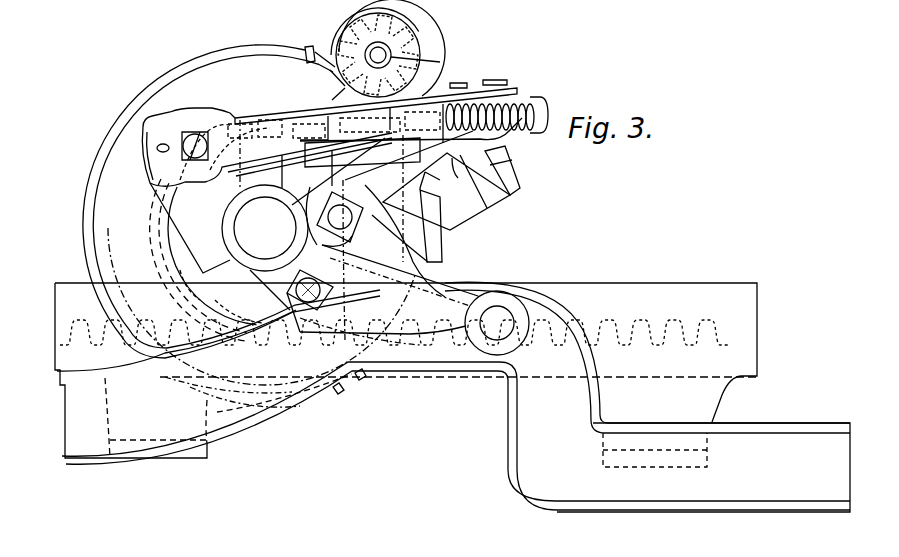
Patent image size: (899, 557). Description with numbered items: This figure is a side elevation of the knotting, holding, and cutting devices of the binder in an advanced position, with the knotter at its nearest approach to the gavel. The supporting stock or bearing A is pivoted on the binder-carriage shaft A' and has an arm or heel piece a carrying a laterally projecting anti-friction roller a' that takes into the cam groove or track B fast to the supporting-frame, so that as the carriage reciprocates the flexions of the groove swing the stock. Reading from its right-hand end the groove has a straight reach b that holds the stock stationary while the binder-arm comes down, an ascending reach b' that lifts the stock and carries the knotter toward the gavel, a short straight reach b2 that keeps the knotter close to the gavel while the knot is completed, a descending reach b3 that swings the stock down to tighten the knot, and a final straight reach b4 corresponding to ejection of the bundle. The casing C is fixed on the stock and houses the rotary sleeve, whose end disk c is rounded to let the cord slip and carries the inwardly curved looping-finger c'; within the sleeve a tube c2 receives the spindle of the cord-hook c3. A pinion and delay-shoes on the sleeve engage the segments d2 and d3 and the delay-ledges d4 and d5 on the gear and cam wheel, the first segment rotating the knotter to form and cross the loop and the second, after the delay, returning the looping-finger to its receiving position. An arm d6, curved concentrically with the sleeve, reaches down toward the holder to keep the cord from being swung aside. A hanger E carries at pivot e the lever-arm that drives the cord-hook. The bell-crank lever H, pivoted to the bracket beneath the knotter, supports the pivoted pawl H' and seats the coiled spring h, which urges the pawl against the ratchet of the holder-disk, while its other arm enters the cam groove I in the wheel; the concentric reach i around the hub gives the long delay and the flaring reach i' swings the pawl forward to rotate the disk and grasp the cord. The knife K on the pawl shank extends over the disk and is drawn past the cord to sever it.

The cam groove or track B is at (452, 397).
The straight reach b is at (655, 462).
The ascending reach b' is at (456, 396).
The short straight reach b2 is at (362, 338).
The descending reach b3 is at (176, 344).
The straight reach b4 is at (228, 416).
The segment d2 is at (330, 56).
The segment d3 is at (348, 385).
The delay-ledge d4 is at (176, 68).
The delay-ledge d5 is at (445, 236).
The arm d6 is at (425, 95).
The casing C is at (395, 48).
The disk or button c is at (375, 27).
The looping-finger c' is at (378, 55).
The tube c2 is at (428, 59).
The cord-hook c3 is at (378, 55).
The coiled spring h is at (533, 100).
The pivoted pawl H' is at (411, 135).
The bell-crank lever H is at (382, 214).
The hanger E is at (446, 191).
The pivot e is at (513, 164).
The supporting stock or bearing A is at (310, 221).
The binder-carriage shaft A' is at (265, 228).
The arm or heel piece a is at (400, 282).
The stud or anti-friction roller a' is at (510, 308).
The cam groove or way I is at (170, 240).
The concentric reach i is at (173, 281).
The flaring reach i' is at (227, 321).
The knife K is at (321, 85).